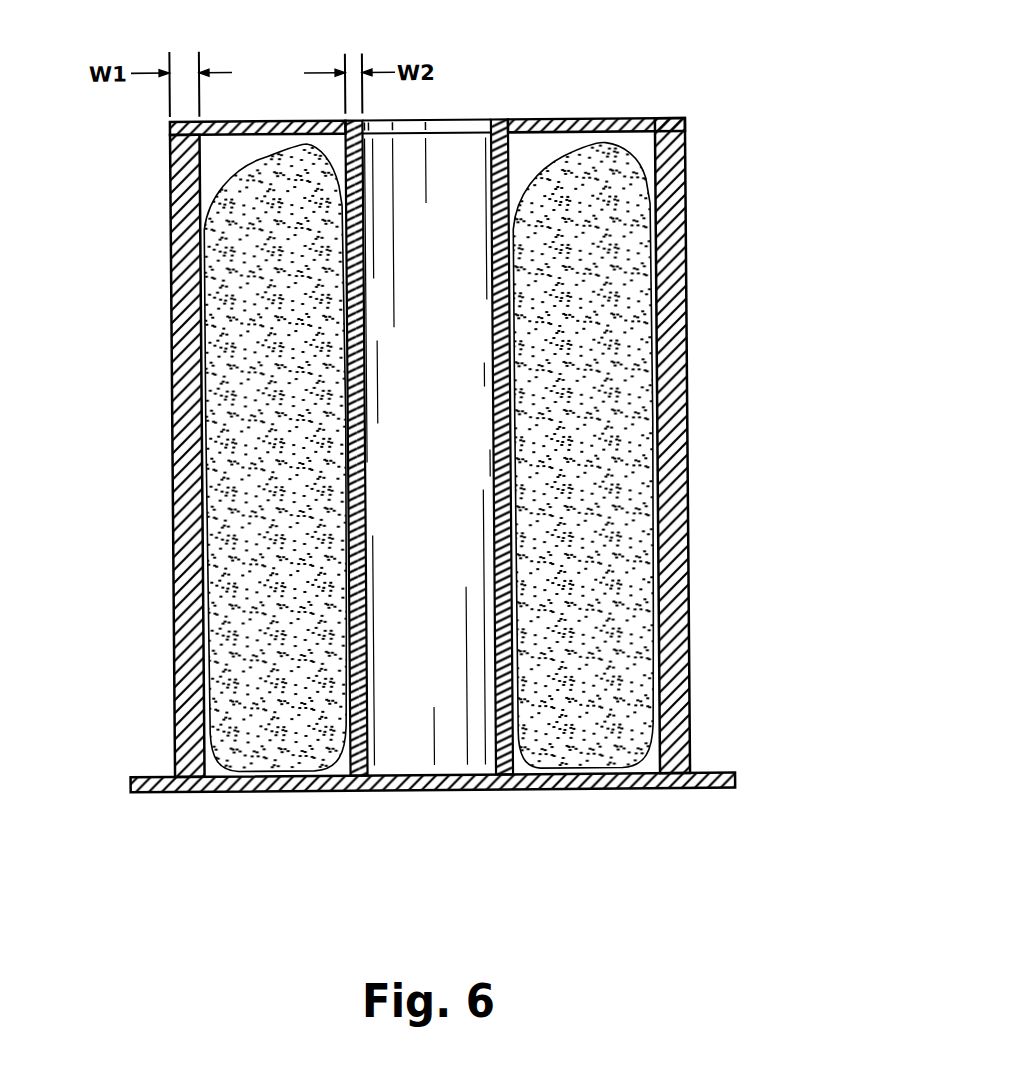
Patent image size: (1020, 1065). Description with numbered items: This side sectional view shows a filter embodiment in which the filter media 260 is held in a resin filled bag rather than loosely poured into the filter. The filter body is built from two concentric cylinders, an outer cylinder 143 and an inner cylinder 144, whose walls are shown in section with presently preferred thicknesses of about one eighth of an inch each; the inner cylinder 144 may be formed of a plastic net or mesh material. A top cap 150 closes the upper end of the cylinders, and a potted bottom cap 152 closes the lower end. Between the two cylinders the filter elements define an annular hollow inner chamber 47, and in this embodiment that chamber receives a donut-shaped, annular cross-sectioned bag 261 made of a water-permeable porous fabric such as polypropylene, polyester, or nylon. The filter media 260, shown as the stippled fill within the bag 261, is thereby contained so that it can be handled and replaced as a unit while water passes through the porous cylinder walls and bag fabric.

The annular hollow inner chamber 47 is at (226, 162).
The outer cylinder 143 is at (686, 256).
The inner cylinder 144 is at (489, 152).
The top cap 150 is at (627, 121).
The potted bottom cap 152 is at (723, 790).
The filter media 260 is at (632, 157).
The bag 261 is at (257, 152).